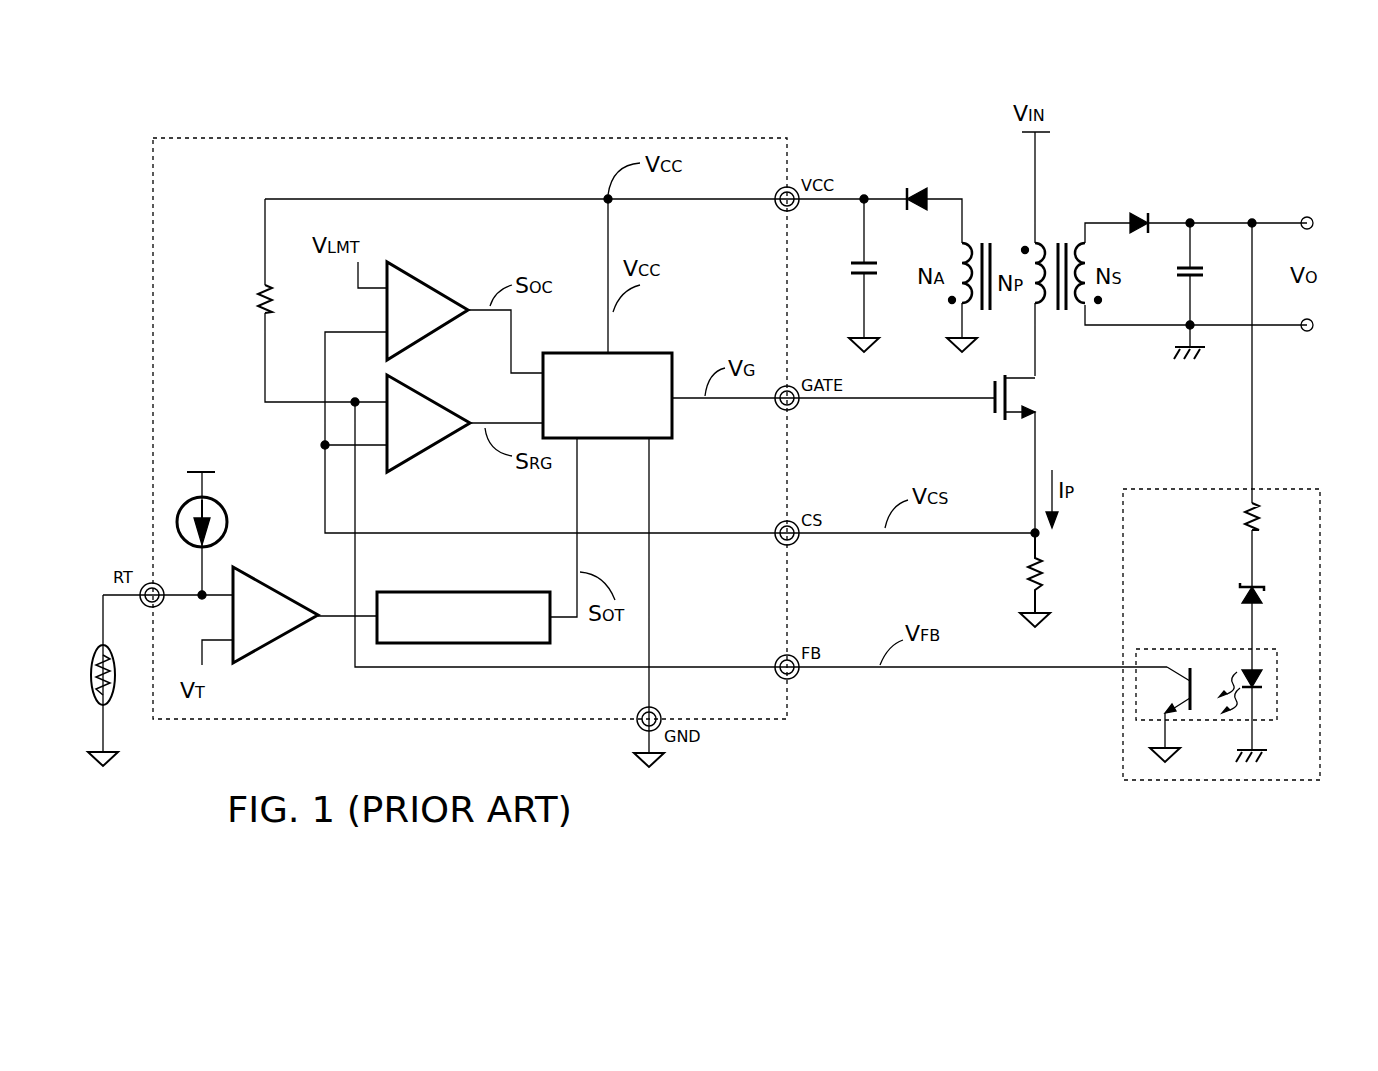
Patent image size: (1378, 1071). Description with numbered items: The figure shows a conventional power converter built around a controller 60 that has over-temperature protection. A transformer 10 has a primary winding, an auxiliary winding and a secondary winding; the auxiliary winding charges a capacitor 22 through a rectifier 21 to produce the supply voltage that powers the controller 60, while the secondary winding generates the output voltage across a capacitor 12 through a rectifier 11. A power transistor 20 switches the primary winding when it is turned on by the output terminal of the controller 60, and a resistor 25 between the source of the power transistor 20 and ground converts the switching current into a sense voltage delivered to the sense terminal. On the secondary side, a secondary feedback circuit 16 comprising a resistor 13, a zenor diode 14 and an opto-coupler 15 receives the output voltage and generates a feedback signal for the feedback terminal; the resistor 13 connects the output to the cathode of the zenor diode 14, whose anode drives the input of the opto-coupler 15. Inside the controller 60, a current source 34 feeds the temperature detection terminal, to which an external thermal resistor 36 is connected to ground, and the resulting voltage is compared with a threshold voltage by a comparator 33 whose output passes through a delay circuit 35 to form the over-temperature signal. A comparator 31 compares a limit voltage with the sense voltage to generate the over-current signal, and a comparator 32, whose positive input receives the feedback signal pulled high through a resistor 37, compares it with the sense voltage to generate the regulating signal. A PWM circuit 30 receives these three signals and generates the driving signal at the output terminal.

The transformer 10 is at (1062, 228).
The rectifier 11 is at (1135, 207).
The capacitor 12 is at (1205, 272).
The resistor 13 is at (1262, 518).
The zenor diode 14 is at (1238, 595).
The opto-coupler 15 is at (1277, 690).
The secondary feedback circuit 16 is at (1297, 488).
The power transistor 20 is at (1040, 400).
The rectifier 21 is at (912, 185).
The capacitor 22 is at (877, 268).
The resistor 25 is at (1022, 578).
The PWM circuit 30 is at (672, 428).
The comparator 31 is at (425, 280).
The comparator 32 is at (425, 393).
The comparator 33 is at (278, 588).
The current source 34 is at (228, 527).
The delay circuit 35 is at (452, 592).
The thermal resistor 36 is at (91, 668).
The resistor 37 is at (253, 300).
The controller 60 is at (730, 138).